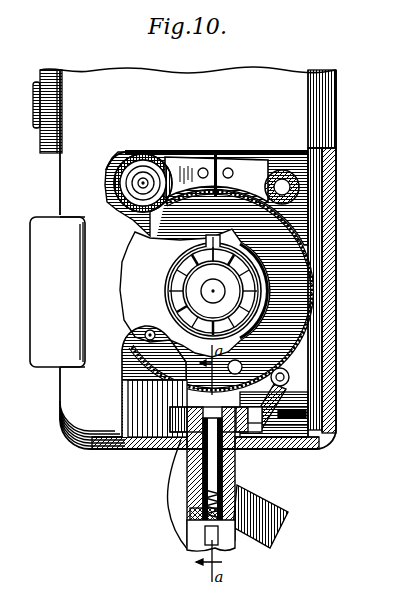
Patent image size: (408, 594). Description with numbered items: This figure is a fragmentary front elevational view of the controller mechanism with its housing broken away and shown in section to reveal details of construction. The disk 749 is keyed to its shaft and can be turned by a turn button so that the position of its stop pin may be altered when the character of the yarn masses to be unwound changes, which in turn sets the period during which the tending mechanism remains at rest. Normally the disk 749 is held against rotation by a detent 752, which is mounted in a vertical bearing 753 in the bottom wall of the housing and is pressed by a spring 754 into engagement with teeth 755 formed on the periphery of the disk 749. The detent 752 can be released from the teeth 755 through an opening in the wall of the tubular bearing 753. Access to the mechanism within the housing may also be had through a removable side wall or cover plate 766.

The removable side wall or cover plate 766 is at (330, 203).
The second disk 749 is at (292, 299).
The teeth 755 is at (305, 353).
The detent 752 is at (197, 430).
The vertical bearing 753 is at (238, 465).
The spring 754 is at (197, 498).